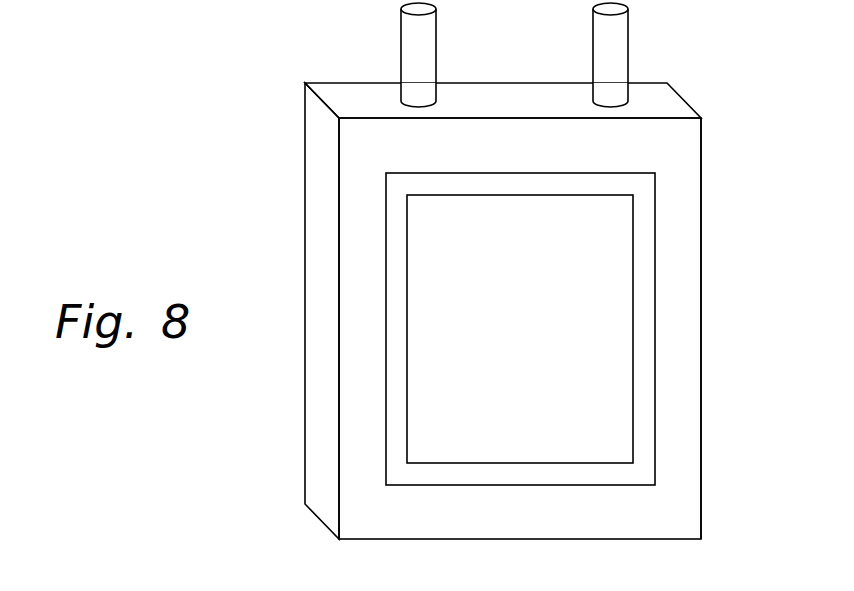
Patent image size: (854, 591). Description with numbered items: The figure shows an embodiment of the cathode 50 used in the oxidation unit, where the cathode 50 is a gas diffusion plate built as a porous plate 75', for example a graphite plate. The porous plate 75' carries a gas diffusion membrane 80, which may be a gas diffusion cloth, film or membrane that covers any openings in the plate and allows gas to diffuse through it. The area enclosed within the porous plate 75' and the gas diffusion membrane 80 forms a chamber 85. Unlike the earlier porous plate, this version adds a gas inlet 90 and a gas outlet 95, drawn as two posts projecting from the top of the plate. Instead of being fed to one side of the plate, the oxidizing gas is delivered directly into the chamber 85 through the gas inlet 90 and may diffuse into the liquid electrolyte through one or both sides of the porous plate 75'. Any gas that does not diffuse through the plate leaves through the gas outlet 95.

The cathode 50 is at (240, 150).
The porous plate 75' is at (732, 328).
The gas diffusion membrane 80 is at (633, 330).
The chamber 85 is at (600, 420).
The gas inlet 90 is at (629, 27).
The gas outlet 95 is at (400, 28).